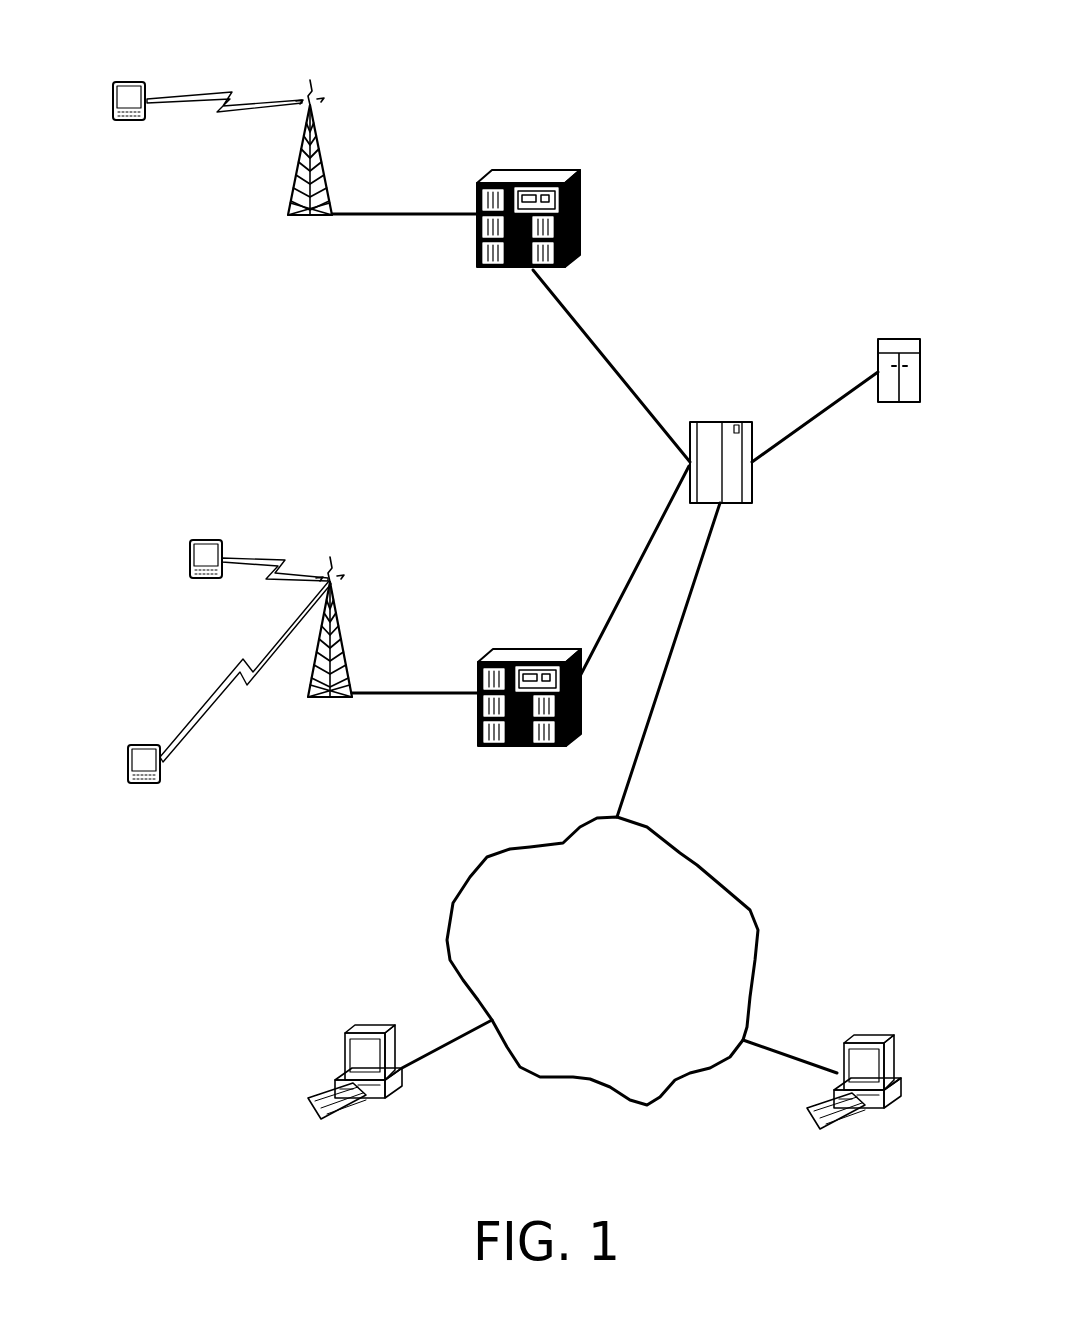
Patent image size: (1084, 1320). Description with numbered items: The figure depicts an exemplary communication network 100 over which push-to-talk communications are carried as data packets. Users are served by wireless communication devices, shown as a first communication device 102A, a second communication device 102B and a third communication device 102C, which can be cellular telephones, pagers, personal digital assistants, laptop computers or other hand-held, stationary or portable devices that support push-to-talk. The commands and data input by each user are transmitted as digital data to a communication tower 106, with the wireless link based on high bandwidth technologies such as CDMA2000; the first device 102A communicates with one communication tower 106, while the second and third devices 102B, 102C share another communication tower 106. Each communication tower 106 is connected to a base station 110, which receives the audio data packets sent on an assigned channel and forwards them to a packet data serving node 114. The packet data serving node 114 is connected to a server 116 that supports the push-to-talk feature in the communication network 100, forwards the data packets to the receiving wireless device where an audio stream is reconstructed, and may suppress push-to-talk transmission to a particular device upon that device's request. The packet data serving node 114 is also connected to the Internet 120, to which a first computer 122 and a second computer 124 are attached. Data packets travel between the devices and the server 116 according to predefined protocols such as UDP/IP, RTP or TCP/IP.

The communication network 100 is at (680, 66).
The communication device 102A is at (147, 92).
The communication device 102B is at (222, 548).
The communication device 102C is at (128, 767).
The communication tower 106 is at (323, 140).
The base station 110 is at (582, 198).
The packet data serving node 114 is at (740, 422).
The server 116 is at (917, 338).
The Internet 120 is at (700, 865).
The computer 122 is at (355, 1092).
The computer 124 is at (854, 1096).